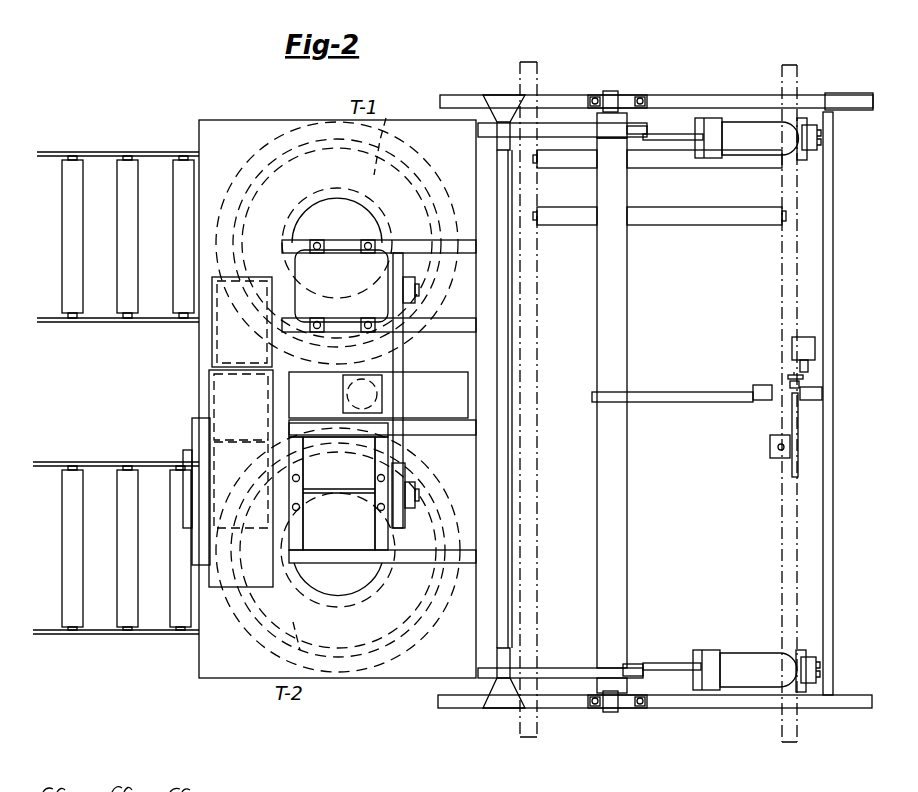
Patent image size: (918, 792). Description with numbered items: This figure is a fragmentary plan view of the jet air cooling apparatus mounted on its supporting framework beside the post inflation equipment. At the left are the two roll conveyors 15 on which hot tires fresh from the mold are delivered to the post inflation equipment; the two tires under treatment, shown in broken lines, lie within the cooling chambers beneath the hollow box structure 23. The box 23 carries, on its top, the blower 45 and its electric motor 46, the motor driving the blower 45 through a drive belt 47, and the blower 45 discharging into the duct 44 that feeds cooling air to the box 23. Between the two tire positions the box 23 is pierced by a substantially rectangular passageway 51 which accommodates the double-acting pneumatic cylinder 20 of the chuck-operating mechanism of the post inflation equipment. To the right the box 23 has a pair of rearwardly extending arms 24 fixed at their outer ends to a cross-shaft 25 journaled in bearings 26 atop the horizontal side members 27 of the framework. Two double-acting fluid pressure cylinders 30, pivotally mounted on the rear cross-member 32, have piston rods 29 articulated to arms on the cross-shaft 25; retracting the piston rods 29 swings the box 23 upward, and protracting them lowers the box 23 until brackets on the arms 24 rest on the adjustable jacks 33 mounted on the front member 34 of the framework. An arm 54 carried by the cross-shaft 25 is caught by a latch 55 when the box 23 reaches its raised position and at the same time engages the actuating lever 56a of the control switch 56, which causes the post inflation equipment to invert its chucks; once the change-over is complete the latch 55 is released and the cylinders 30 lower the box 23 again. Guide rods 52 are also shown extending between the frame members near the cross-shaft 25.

The roll conveyor 15 is at (70, 283).
The double-acting pneumatic cylinder 20 is at (343, 386).
The hollow box structure 23 is at (229, 120).
The rearwardly extending arm 24 is at (565, 123).
The cross-shaft 25 is at (627, 562).
The bearing 26 is at (618, 96).
The horizontal side member 27 is at (706, 100).
The piston rod 29 is at (660, 142).
The double-acting fluid pressure cylinder 30 is at (740, 143).
The rear cross-member 32 is at (814, 470).
The adjustable jack 33 is at (492, 140).
The front member 34 is at (503, 347).
The duct 44 is at (212, 348).
The blower 45 is at (226, 588).
The electric motor 46 is at (340, 262).
The drive belt 47 is at (404, 360).
The rectangular passageway 51 is at (433, 416).
The guide rod 52 is at (546, 168).
The arm 54 is at (686, 396).
The latch 55 is at (790, 402).
The control switch 56 is at (815, 347).
The actuating lever 56a is at (788, 380).